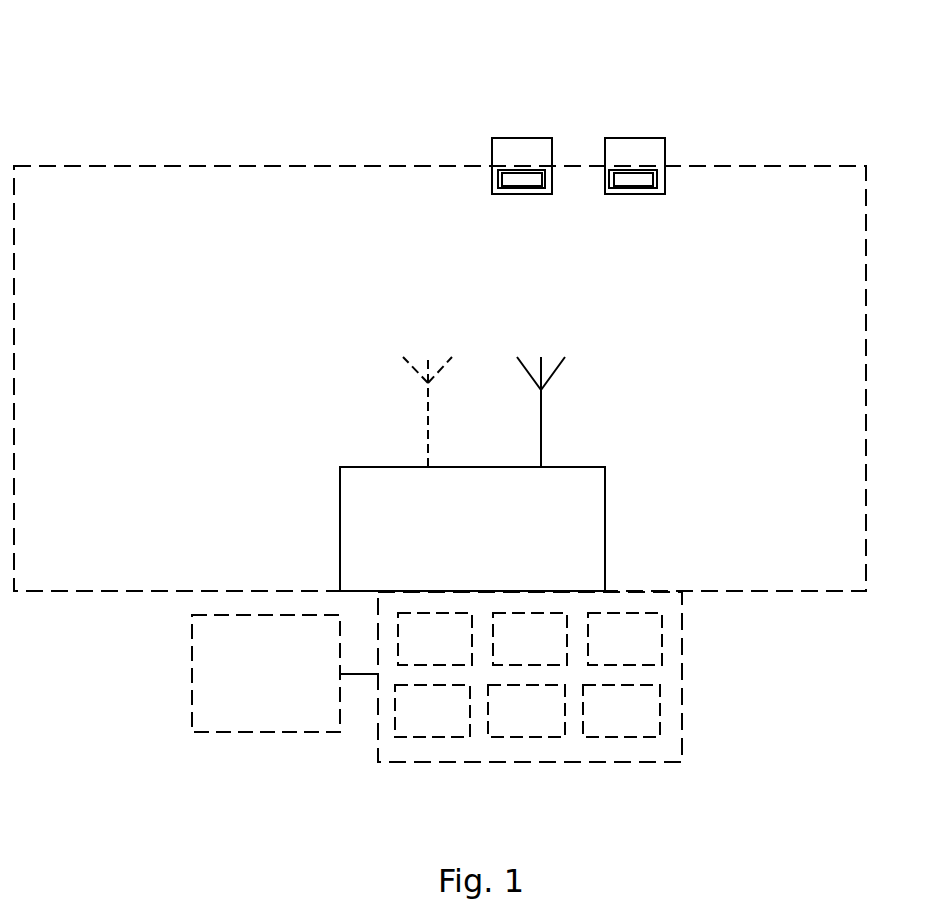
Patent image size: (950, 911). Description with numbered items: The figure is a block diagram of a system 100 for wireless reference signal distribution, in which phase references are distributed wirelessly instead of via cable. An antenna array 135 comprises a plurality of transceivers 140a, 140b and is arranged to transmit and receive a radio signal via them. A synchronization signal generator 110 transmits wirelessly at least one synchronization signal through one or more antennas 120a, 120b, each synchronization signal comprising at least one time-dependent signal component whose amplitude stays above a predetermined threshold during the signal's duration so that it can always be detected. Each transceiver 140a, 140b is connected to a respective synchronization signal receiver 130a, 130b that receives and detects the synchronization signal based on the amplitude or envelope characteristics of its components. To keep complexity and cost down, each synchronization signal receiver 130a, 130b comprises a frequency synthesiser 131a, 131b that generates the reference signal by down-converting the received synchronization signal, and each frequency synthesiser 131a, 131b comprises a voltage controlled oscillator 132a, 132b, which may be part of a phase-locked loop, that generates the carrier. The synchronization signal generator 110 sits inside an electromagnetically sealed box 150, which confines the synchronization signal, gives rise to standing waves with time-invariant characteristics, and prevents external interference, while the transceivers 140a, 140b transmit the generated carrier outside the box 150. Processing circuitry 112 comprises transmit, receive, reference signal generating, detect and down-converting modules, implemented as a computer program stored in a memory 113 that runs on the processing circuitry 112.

The system 100 is at (250, 115).
The synchronization signal generator 110 is at (340, 507).
The processing circuitry 112 is at (683, 683).
The memory 113 is at (192, 693).
The antenna 120a is at (541, 422).
The antenna 120b is at (428, 425).
The synchronization signal receiver 130a is at (512, 194).
The synchronization signal receiver 130b is at (640, 194).
The frequency synthesiser 131a is at (518, 172).
The frequency synthesiser 131b is at (645, 172).
The voltage controlled oscillator 132a is at (498, 172).
The voltage controlled oscillator 132b is at (657, 172).
The antenna array 135 is at (560, 75).
The transceiver 140a is at (515, 138).
The transceiver 140b is at (632, 138).
The electromagnetically sealed box 150 is at (788, 166).